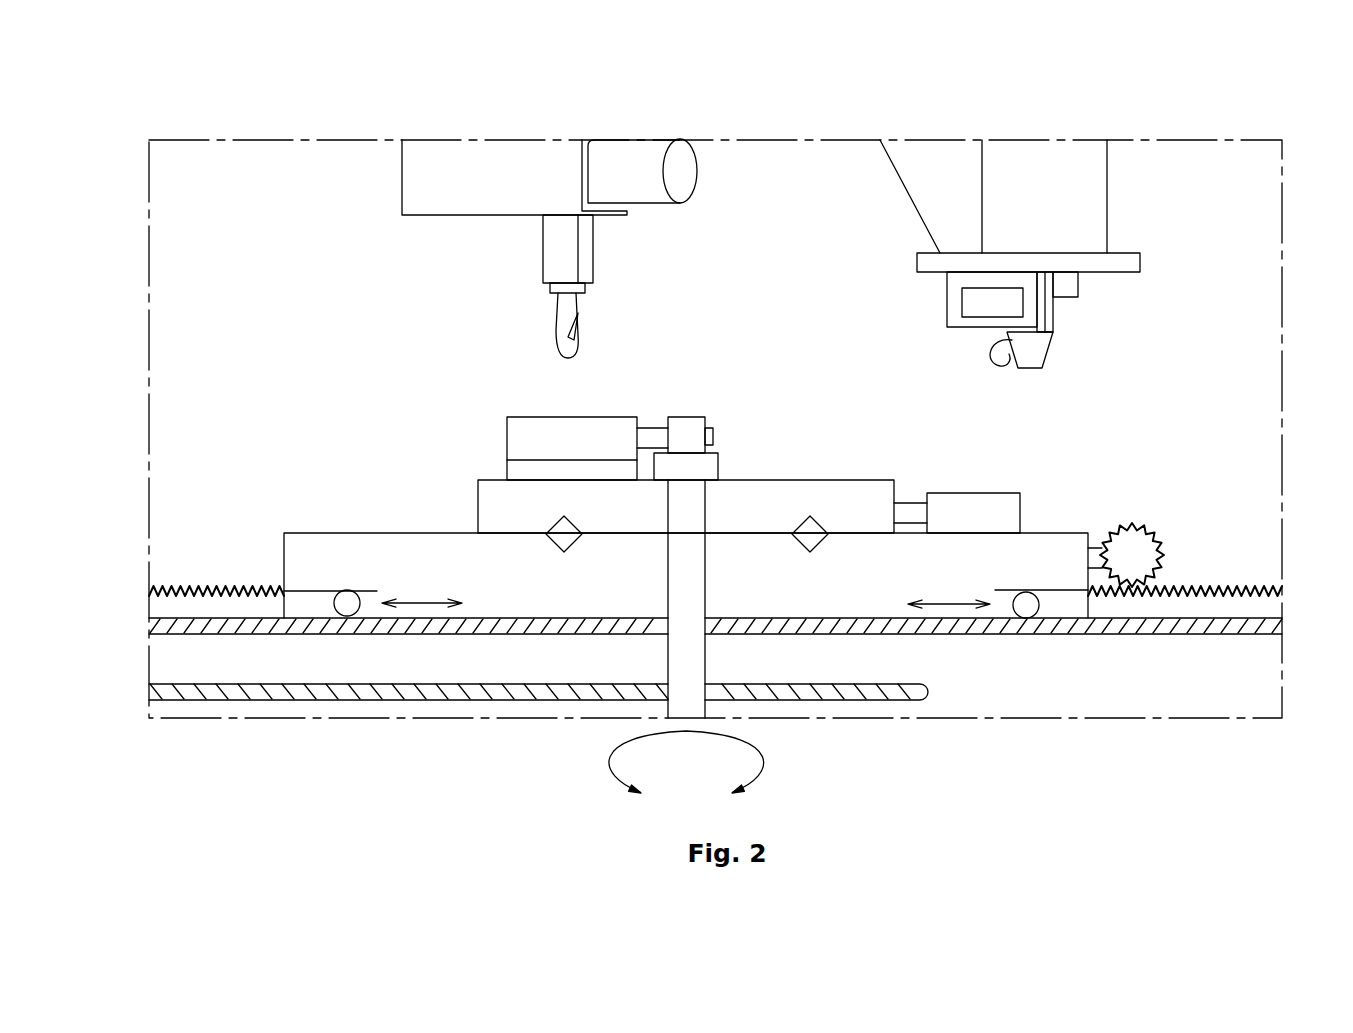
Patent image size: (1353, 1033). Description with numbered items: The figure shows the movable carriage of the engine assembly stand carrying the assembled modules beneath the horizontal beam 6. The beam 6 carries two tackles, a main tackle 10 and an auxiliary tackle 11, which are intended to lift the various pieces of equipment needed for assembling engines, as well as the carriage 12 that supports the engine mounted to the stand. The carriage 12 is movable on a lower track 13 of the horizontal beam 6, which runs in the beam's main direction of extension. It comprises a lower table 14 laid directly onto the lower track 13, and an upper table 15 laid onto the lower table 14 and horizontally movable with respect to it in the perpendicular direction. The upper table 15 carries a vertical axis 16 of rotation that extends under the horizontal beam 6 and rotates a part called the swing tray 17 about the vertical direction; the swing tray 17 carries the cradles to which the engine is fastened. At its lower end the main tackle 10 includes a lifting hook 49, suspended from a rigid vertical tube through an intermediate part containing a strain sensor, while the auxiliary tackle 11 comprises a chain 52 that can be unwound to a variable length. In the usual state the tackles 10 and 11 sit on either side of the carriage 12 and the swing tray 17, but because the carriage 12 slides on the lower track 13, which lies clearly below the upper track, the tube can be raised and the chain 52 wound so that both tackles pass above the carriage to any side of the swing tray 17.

The horizontal beam 6 is at (1221, 639).
The main tackle 10 is at (1028, 126).
The auxiliary tackle 11 is at (635, 121).
The carriage 12 is at (273, 572).
The lower track 13 is at (1218, 617).
The lower table 14 is at (366, 532).
The upper table 15 is at (480, 500).
The vertical axis of rotation 16 is at (705, 510).
The swing tray 17 is at (238, 705).
The lifting hook 49 is at (1050, 355).
The chain 52 is at (577, 340).